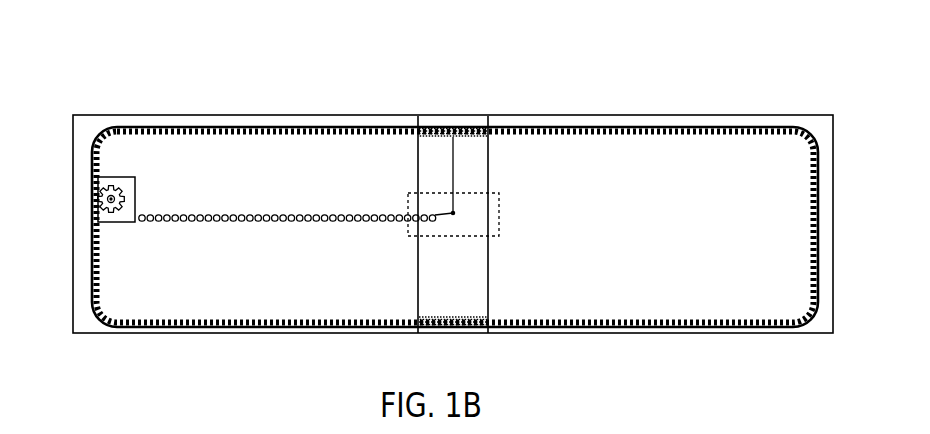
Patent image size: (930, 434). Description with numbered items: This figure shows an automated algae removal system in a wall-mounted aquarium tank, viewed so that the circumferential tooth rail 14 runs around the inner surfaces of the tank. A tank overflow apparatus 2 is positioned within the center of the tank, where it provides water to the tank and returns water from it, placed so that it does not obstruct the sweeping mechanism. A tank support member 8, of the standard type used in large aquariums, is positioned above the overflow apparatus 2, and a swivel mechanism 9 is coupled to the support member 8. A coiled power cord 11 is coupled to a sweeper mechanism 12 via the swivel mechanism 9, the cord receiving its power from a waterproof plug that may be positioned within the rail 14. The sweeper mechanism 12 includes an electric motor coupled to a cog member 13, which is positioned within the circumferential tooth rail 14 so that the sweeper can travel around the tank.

The tank overflow apparatus 2 is at (500, 218).
The tank support member 8 is at (440, 116).
The swivel mechanism 9 is at (453, 213).
The coiled power cord 11 is at (332, 159).
The sweeper mechanism 12 is at (134, 180).
The cog member 13 is at (121, 208).
The circumferential tooth rail 14 is at (557, 128).